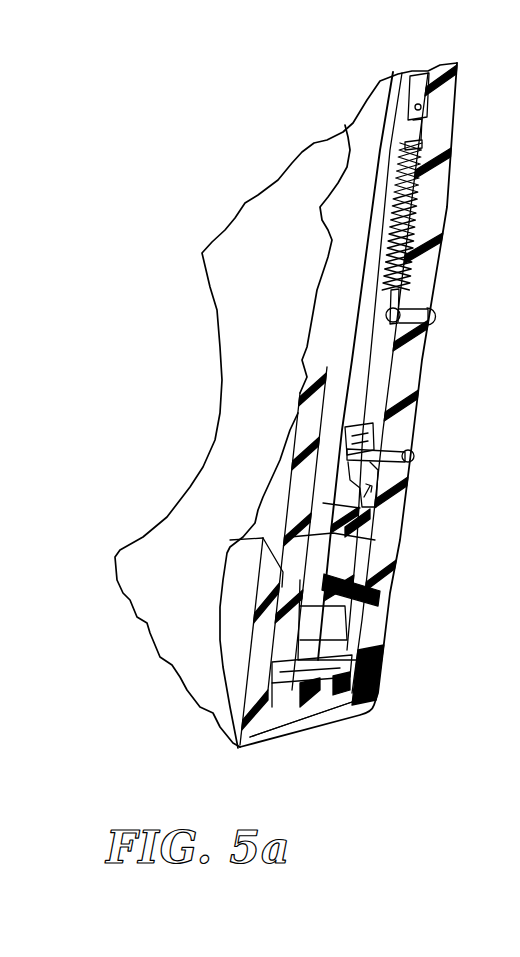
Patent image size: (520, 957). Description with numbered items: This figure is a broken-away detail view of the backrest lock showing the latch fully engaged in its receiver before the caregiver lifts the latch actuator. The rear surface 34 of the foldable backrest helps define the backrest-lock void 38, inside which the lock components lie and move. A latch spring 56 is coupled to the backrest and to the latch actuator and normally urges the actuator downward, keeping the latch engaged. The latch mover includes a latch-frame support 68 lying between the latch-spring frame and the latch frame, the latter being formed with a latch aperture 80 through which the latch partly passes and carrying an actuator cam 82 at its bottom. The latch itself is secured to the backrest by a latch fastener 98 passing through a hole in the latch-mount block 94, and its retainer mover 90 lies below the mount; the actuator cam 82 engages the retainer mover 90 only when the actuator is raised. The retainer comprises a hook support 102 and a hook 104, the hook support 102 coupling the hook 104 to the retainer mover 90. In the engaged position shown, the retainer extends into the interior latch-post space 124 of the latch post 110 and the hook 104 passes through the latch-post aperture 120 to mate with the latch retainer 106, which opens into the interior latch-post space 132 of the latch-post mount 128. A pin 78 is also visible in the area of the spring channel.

The oppositely facing rear surface 34 is at (447, 207).
The backrest-lock void 38 is at (350, 359).
The latch spring 56 is at (396, 197).
The latch-frame support 68 is at (377, 383).
The pin 78 is at (402, 300).
The latch aperture 80 is at (378, 508).
The actuator cam 82 is at (380, 542).
The retainer mover 90 is at (323, 503).
The latch-mount block 94 is at (372, 440).
The latch fastener 98 is at (412, 457).
The hook support 102 is at (345, 562).
The hook 104 is at (380, 596).
The latch retainer 106 is at (387, 617).
The latch post 110 is at (283, 647).
The latch-post aperture 120 is at (380, 633).
The interior latch-post space 124 is at (318, 645).
The latch-post mount 128 is at (250, 545).
The interior latch-post space 132 is at (300, 673).